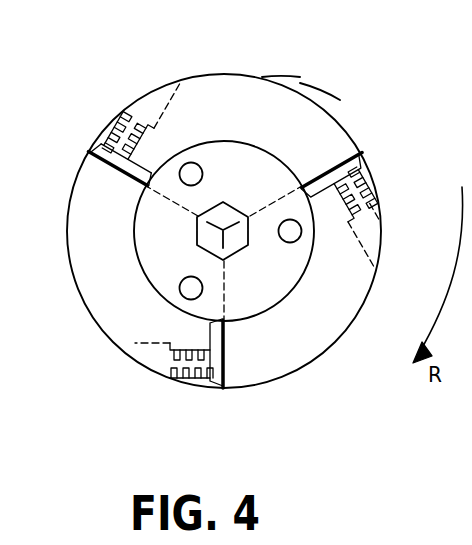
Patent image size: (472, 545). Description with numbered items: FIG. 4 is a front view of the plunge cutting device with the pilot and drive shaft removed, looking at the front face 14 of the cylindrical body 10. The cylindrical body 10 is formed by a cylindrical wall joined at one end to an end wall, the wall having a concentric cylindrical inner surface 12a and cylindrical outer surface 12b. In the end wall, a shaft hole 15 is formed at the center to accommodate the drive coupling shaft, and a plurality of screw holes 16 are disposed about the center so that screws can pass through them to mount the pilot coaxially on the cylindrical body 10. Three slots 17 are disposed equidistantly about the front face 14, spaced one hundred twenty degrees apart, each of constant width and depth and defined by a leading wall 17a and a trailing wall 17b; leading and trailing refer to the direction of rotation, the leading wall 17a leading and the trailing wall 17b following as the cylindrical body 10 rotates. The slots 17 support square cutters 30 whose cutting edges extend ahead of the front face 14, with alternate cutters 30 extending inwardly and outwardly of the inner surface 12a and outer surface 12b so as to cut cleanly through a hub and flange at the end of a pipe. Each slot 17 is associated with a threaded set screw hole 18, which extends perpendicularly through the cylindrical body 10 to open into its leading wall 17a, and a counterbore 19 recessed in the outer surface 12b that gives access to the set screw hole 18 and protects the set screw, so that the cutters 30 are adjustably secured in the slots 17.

The cylindrical body 10 is at (198, 75).
The cylindrical inner surface 12a is at (247, 143).
The cylindrical outer surface 12b is at (279, 83).
The front face 14 is at (320, 113).
The shaft hole 15 is at (237, 252).
The screw holes 16 is at (289, 233).
The slots 17 is at (223, 388).
The leading wall 17a is at (93, 149).
The trailing wall 17b is at (93, 149).
The threaded set screw hole 18 is at (380, 220).
The counterbore 19 is at (378, 262).
The cutters 30 is at (363, 150).